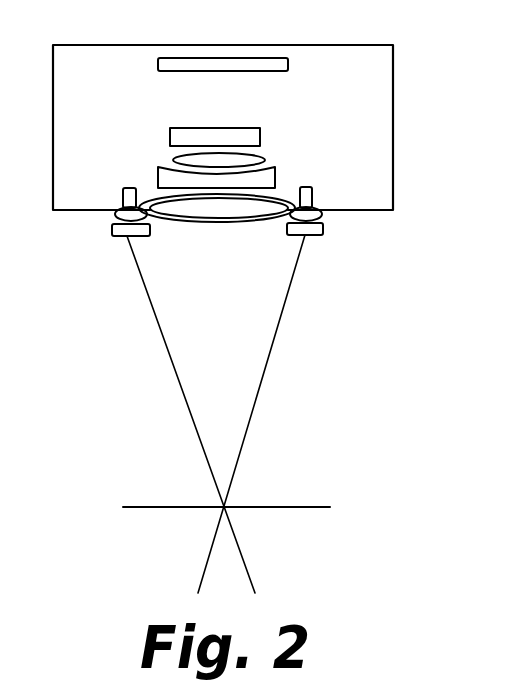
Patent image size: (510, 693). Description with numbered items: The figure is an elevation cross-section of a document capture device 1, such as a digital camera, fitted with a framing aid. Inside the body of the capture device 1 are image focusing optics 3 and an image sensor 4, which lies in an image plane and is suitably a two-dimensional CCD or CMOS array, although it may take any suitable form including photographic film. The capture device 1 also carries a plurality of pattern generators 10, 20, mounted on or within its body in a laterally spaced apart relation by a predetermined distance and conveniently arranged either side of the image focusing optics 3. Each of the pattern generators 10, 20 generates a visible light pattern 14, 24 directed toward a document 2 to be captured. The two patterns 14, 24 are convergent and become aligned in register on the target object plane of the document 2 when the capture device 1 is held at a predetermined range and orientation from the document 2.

The document capture device 1 is at (390, 117).
The document 2 is at (308, 505).
The image focusing optics 3 is at (258, 137).
The image sensor 4 is at (282, 71).
The pattern generator 10 is at (118, 236).
The pattern generator 20 is at (320, 235).
The visible light pattern 14 is at (178, 382).
The visible light pattern 24 is at (262, 388).